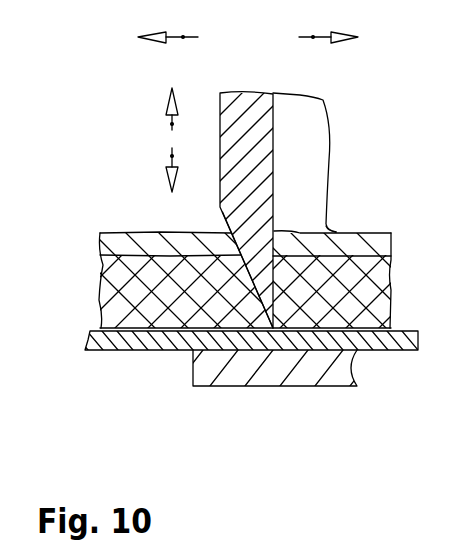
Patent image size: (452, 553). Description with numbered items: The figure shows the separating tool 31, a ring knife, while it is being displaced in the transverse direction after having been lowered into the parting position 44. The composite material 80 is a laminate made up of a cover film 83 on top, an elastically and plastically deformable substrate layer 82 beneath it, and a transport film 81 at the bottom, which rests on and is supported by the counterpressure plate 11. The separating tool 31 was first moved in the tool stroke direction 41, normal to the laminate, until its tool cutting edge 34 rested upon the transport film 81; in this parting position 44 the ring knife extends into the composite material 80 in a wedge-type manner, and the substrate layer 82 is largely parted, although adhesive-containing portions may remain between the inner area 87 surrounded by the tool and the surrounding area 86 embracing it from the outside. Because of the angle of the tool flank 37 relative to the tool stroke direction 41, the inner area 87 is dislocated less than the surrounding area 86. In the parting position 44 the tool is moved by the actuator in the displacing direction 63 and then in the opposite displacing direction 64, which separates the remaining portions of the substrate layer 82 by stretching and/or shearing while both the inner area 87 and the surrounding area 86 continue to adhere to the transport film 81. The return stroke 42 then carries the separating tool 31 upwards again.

The counterpressure plate 11 is at (288, 363).
The separating tool 31 is at (264, 145).
The tool cutting edge 34 is at (272, 330).
The tool flank 37 is at (333, 232).
The tool stroke direction 41 is at (172, 156).
The return stroke 42 is at (172, 124).
The parting position 44 is at (287, 220).
The displacing direction 63 is at (183, 37).
The opposite displacing direction 64 is at (313, 37).
The composite material 80 is at (95, 283).
The transport film 81 is at (393, 342).
The substrate layer 82 is at (142, 310).
The cover film 83 is at (118, 245).
The surrounding area 86 is at (132, 233).
The inner area 87 is at (338, 228).